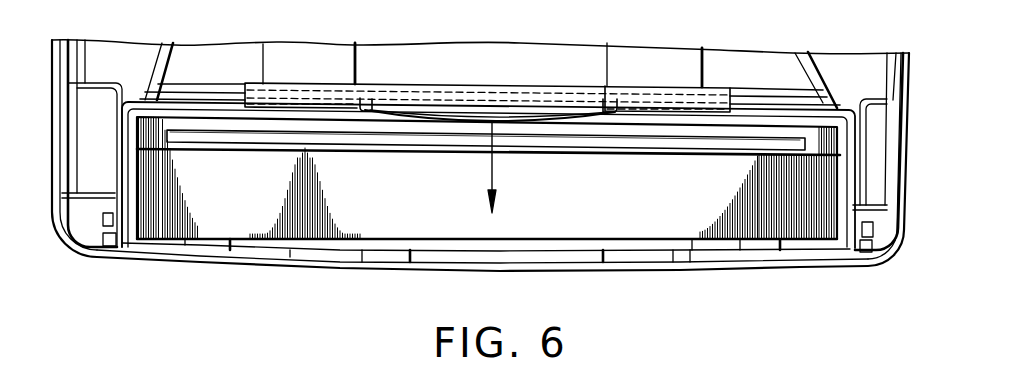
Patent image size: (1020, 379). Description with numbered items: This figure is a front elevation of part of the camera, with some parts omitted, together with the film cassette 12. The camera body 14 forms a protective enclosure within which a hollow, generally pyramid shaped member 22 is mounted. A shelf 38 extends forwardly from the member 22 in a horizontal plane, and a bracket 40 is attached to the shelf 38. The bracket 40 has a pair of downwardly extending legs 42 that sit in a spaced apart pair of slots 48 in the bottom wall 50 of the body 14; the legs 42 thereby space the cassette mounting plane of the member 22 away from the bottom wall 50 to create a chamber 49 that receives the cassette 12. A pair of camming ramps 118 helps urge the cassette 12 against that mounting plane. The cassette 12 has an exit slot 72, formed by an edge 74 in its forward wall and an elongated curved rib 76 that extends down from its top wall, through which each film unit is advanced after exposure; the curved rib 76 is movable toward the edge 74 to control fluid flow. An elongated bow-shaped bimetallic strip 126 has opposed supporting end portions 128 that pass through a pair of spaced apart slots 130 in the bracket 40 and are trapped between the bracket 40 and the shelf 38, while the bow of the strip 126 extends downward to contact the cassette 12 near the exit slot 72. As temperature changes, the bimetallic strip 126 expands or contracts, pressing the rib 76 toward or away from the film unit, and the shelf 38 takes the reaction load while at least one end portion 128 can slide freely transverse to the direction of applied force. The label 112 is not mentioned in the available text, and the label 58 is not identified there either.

The cassette 12 is at (411, 252).
The body 14 is at (912, 130).
The pyramid shaped member 22 is at (831, 70).
The shelf 38 is at (740, 90).
The bracket 40 is at (771, 102).
The legs 42 is at (103, 233).
The slots 48 is at (104, 246).
The chamber 49 is at (127, 160).
The bottom wall 50 is at (573, 271).
The spacer 58 is at (690, 245).
The exit slot 72 is at (192, 137).
The edge 74 is at (248, 141).
The curved rib 76 is at (460, 143).
The bracket 112 is at (115, 195).
The camming ramps 118 is at (213, 242).
The bimetallic strip 126 is at (532, 125).
The supporting end portions 128 is at (333, 100).
The slots 130 is at (368, 108).